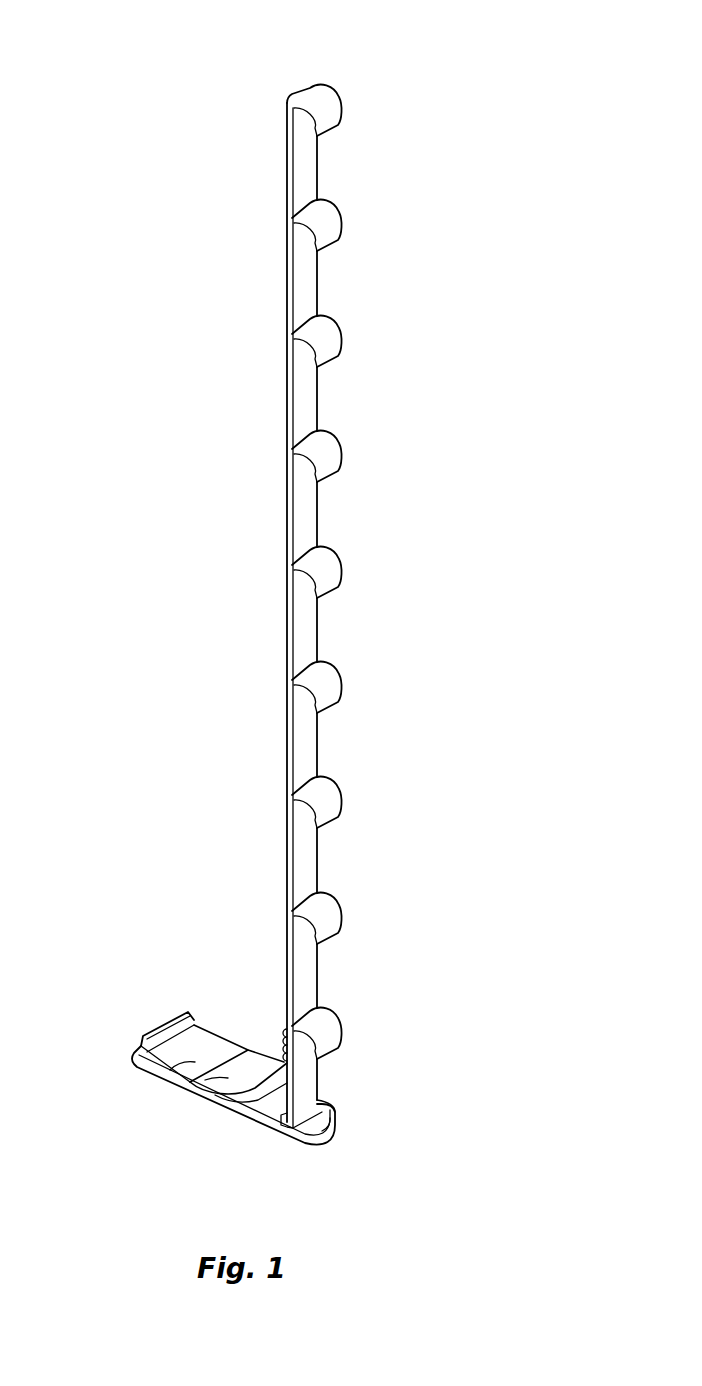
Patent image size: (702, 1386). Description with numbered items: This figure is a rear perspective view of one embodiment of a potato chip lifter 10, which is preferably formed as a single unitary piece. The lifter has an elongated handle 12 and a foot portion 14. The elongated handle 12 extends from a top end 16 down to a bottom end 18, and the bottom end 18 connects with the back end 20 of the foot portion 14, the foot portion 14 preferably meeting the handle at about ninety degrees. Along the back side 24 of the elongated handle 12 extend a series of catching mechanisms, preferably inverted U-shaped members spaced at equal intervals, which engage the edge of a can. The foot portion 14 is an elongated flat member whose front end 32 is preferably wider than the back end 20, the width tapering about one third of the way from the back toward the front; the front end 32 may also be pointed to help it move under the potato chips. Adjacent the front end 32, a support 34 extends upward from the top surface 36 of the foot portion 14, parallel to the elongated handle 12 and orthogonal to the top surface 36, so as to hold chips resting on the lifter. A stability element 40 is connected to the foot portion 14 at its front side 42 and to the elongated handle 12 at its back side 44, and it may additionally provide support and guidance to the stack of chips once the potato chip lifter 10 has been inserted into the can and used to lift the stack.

The potato chip lifter 10 is at (506, 90).
The elongated handle 12 is at (287, 387).
The foot portion 14 is at (258, 1125).
The top end 16 is at (322, 85).
The bottom end 18 is at (336, 1105).
The back end 20 is at (333, 1137).
The back side 24 is at (312, 626).
The front end 32 is at (135, 1052).
The support 34 is at (168, 1022).
The top surface 36 is at (203, 1043).
The stability element 40 is at (203, 1087).
The front side 42 is at (188, 1073).
The back side 44 is at (253, 1080).